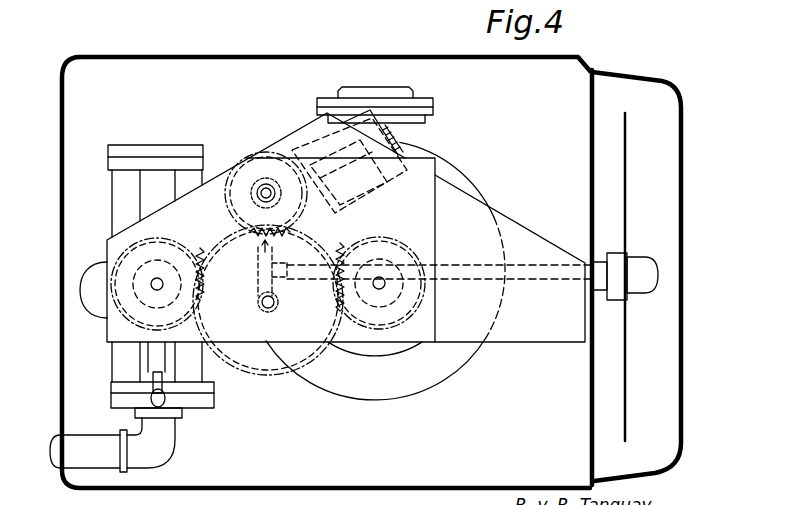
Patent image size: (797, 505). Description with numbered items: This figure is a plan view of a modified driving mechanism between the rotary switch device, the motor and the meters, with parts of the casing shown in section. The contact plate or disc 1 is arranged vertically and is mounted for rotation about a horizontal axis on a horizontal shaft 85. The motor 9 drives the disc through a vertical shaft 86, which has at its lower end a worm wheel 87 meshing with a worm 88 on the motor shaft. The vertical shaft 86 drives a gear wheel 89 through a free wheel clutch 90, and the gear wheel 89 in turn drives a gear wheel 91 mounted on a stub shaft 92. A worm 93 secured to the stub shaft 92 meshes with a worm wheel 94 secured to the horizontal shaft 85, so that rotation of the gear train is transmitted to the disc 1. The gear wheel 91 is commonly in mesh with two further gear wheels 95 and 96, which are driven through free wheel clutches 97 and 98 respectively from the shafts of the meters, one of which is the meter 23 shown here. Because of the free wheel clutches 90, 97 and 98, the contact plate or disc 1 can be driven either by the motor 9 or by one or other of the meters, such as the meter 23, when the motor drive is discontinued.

The contact plate or disc 1 is at (628, 160).
The motor 9 is at (392, 130).
The meter 23 is at (457, 375).
The horizontal shaft 85 is at (492, 270).
The vertical shaft 86 is at (265, 195).
The worm wheel 87 is at (252, 196).
The worm 88 is at (308, 219).
The gear wheel 89 is at (238, 165).
The free wheel clutch 90 is at (271, 150).
The gear wheel 91 is at (250, 372).
The stub shaft 92 is at (278, 303).
The worm 93 is at (262, 302).
The worm wheel 94 is at (262, 266).
The gear wheel 95 is at (386, 243).
The gear wheel 96 is at (157, 272).
The free wheel clutch 97 is at (402, 293).
The free wheel clutch 98 is at (128, 315).